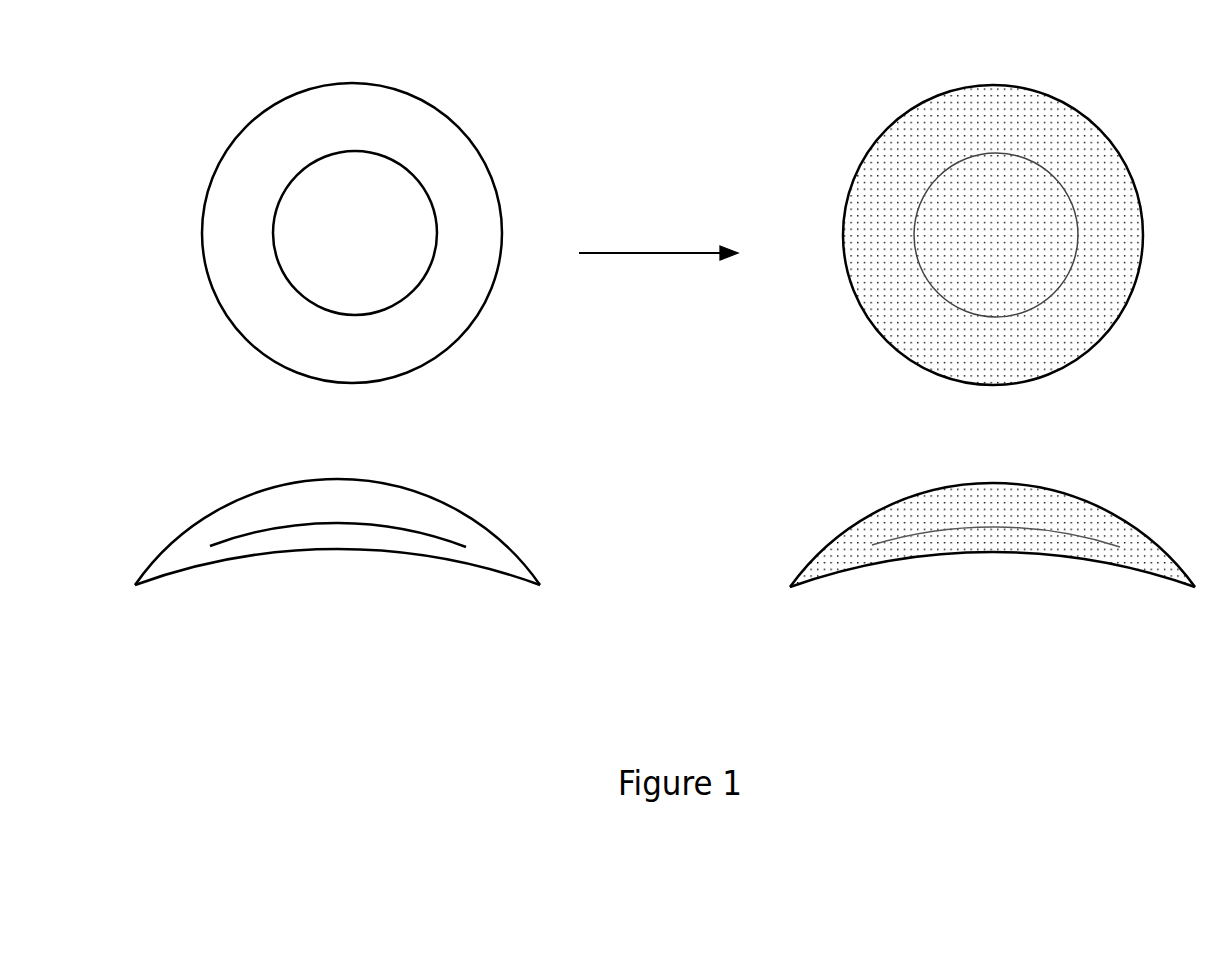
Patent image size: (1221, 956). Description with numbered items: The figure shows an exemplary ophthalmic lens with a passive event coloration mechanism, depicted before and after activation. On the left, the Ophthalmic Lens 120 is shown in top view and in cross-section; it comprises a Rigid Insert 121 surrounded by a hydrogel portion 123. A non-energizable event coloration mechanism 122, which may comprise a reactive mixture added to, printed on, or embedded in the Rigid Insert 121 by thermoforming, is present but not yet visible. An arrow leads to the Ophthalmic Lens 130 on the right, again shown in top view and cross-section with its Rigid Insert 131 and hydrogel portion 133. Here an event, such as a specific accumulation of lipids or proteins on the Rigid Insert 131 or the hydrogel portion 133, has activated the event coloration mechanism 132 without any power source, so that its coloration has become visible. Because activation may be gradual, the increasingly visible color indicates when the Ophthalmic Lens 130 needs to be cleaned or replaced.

The Ophthalmic Lens 120 is at (330, 329).
The Rigid Insert 121 is at (304, 273).
The event coloration mechanism 122 is at (383, 177).
The hydrogel portion 123 is at (412, 320).
The Ophthalmic Lens 130 is at (979, 330).
The Rigid Insert 131 is at (948, 278).
The event coloration mechanism 132 is at (1027, 185).
The hydrogel portion 133 is at (1058, 322).